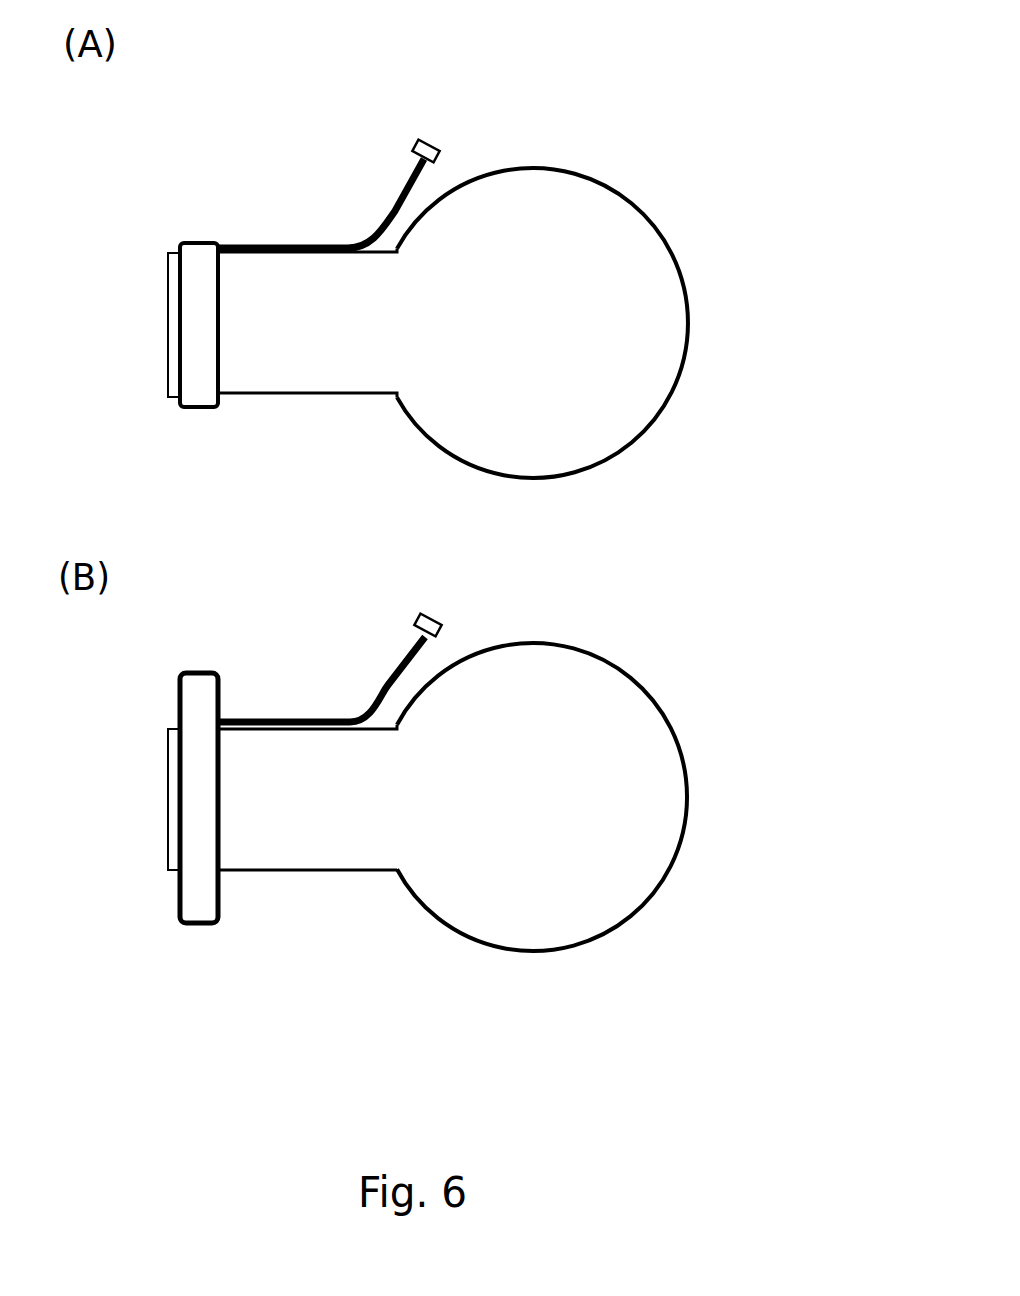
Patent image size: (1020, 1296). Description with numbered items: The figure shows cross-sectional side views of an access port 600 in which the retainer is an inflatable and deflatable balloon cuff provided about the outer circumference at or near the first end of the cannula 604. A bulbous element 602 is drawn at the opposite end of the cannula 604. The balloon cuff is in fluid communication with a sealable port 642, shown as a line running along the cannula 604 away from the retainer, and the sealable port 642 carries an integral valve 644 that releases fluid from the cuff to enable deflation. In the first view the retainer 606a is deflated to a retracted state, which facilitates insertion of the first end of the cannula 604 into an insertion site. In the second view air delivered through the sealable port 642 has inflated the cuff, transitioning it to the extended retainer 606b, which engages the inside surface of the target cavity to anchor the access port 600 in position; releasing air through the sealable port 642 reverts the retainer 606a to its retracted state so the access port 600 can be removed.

In FIG. 6A, the access port 600 is at (147, 307).
In FIG. 6B, the access port 600 is at (152, 805).
In FIG. 6A, the bulb envelope 602 is at (605, 182).
In FIG. 6B, the bulb envelope 602 is at (632, 678).
In FIG. 6A, the cannula 604 is at (348, 395).
In FIG. 6B, the cannula 604 is at (270, 869).
In FIG. 6A, the retainer in retracted state 606a is at (193, 243).
In FIG. 6B, the retainer in extended state 606b is at (195, 924).
In FIG. 6A, the sealable port 642 is at (396, 202).
In FIG. 6B, the sealable port 642 is at (388, 686).
In FIG. 6A, the integral valve 644 is at (433, 141).
In FIG. 6B, the integral valve 644 is at (430, 614).